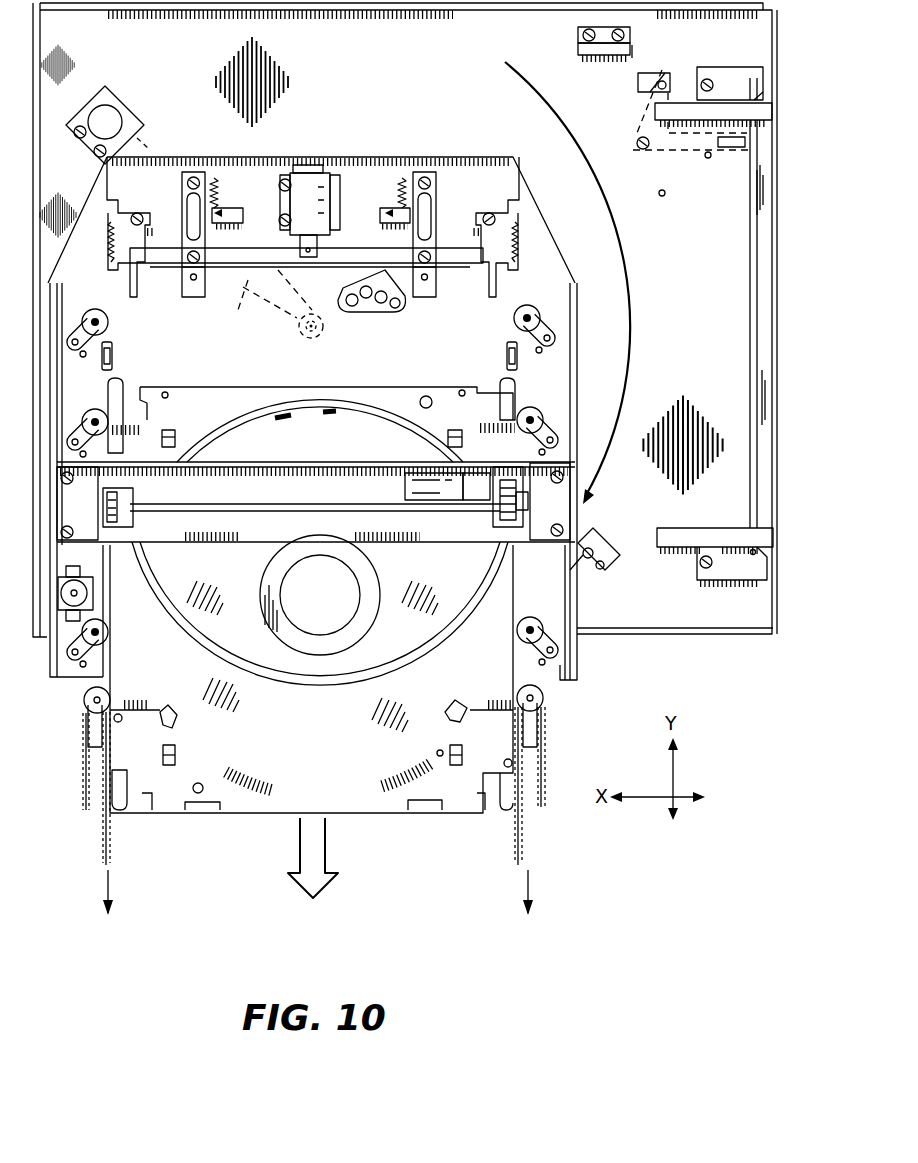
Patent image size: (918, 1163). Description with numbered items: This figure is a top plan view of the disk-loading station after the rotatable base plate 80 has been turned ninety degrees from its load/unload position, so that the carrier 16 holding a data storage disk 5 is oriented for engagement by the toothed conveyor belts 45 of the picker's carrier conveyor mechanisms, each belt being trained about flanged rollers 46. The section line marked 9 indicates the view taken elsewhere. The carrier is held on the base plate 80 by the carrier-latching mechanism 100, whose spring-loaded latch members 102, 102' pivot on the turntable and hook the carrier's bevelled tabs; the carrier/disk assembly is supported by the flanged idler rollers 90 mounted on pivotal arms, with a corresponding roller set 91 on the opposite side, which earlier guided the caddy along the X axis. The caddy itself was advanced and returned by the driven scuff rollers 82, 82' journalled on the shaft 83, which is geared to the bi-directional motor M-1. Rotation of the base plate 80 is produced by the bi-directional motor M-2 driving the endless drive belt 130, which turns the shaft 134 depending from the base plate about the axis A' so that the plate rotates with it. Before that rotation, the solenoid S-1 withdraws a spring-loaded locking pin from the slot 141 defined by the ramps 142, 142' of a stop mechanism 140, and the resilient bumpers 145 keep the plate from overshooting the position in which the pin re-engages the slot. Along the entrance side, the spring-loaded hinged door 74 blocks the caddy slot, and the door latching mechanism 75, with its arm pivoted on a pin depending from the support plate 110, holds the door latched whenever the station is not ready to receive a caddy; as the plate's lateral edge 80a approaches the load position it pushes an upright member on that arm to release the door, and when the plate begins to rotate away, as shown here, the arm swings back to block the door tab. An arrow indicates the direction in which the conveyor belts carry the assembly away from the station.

The data storage disk 5 is at (313, 730).
The section line of FIG. 9 is at (793, 60).
The carrier 16 is at (375, 824).
The conveyor belt 45 is at (112, 846).
The flanged roller 46 is at (84, 690).
The door 74 is at (747, 331).
The door latching mechanism 75 is at (684, 152).
The base plate 80 is at (413, 372).
The lateral edge 80a is at (575, 413).
The scuff roller 82 is at (138, 500).
The scuff roller 82' is at (530, 497).
The shaft 83 is at (247, 506).
The flanged idler roller 90 is at (72, 418).
The roller assembly 91 is at (543, 407).
The carrier-latching mechanism 100 is at (379, 147).
The latch member 102 is at (504, 229).
The latch member 102' is at (114, 229).
The support plate 110 is at (701, 282).
The drive belt 130 is at (263, 304).
The shaft 134 is at (307, 340).
The stop mechanism 140 is at (612, 577).
The slot 141 is at (585, 558).
The ramp 142 is at (565, 585).
The ramp 142' is at (599, 540).
The resilient bumper 145 is at (601, 60).
The pivot axis A' is at (335, 340).
The bi-directional motor M-1 is at (405, 490).
The bi-directional motor M-2 is at (112, 122).
The solenoid S-1 is at (97, 590).